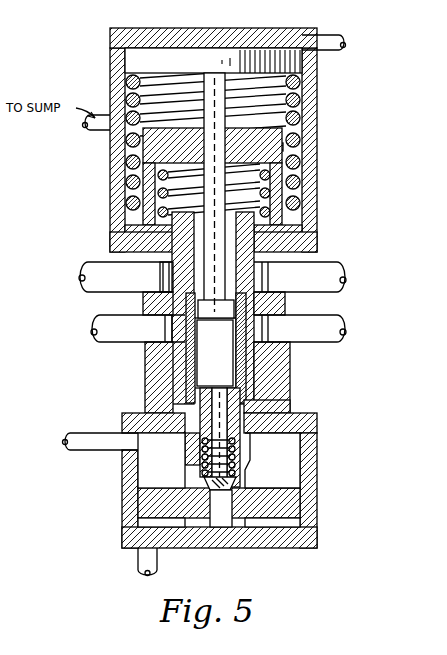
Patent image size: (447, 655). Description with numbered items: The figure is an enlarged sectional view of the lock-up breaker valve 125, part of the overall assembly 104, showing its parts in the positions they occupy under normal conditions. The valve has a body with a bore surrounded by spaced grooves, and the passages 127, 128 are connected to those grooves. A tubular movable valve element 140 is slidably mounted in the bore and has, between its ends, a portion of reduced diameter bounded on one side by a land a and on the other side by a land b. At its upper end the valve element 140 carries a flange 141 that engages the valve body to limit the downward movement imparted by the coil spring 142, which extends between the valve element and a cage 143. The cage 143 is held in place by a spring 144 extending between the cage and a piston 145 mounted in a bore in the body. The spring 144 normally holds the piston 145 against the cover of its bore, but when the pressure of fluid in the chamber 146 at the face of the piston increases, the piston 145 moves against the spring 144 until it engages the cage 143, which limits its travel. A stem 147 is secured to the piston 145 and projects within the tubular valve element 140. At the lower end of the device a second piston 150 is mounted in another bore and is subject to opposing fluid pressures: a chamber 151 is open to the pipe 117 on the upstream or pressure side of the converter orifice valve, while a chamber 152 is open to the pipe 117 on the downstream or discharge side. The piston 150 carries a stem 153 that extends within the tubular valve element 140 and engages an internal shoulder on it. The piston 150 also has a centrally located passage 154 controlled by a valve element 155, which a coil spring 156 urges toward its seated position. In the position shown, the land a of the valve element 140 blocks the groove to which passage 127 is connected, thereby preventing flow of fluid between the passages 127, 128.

The valve assembly 104 is at (169, 126).
The pipe 117 is at (73, 434).
The lock-up breaker valve 125 is at (300, 26).
The passage 127 is at (105, 266).
The passage 128 is at (120, 336).
The movable valve element 140 is at (270, 296).
The flange 141 is at (142, 226).
The coil spring 142 is at (290, 200).
The cage 143 is at (288, 128).
The spring 144 is at (126, 144).
The piston 145 is at (132, 62).
The chamber 146 is at (165, 50).
The stem 147 is at (205, 75).
The piston 150 is at (152, 505).
The chamber 151 is at (278, 530).
The chamber 152 is at (288, 450).
The stem 153 is at (234, 406).
The passage 154 is at (222, 520).
The valve element 155 is at (206, 484).
The coil spring 156 is at (206, 455).
The land a is at (172, 277).
The land b is at (186, 402).